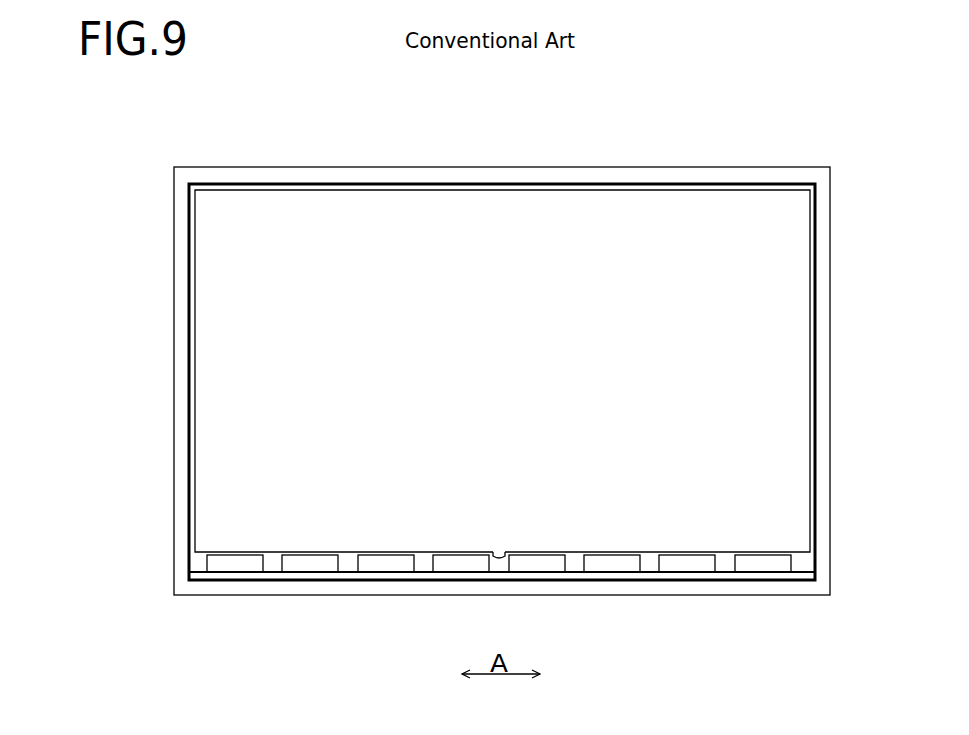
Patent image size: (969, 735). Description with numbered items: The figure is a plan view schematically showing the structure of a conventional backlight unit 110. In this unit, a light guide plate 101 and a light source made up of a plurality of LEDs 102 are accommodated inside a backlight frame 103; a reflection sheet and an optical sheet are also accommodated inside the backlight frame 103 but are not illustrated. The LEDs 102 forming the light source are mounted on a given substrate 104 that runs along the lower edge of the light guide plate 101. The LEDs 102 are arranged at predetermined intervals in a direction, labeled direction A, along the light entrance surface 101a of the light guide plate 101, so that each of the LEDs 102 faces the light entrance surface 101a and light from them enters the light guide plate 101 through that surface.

The backlight unit 110 is at (191, 151).
The backlight frame 103 is at (821, 174).
The light guide plate 101 is at (805, 195).
The light entrance surface 101a is at (499, 551).
The LEDs 102 is at (235, 563).
The substrate 104 is at (802, 577).